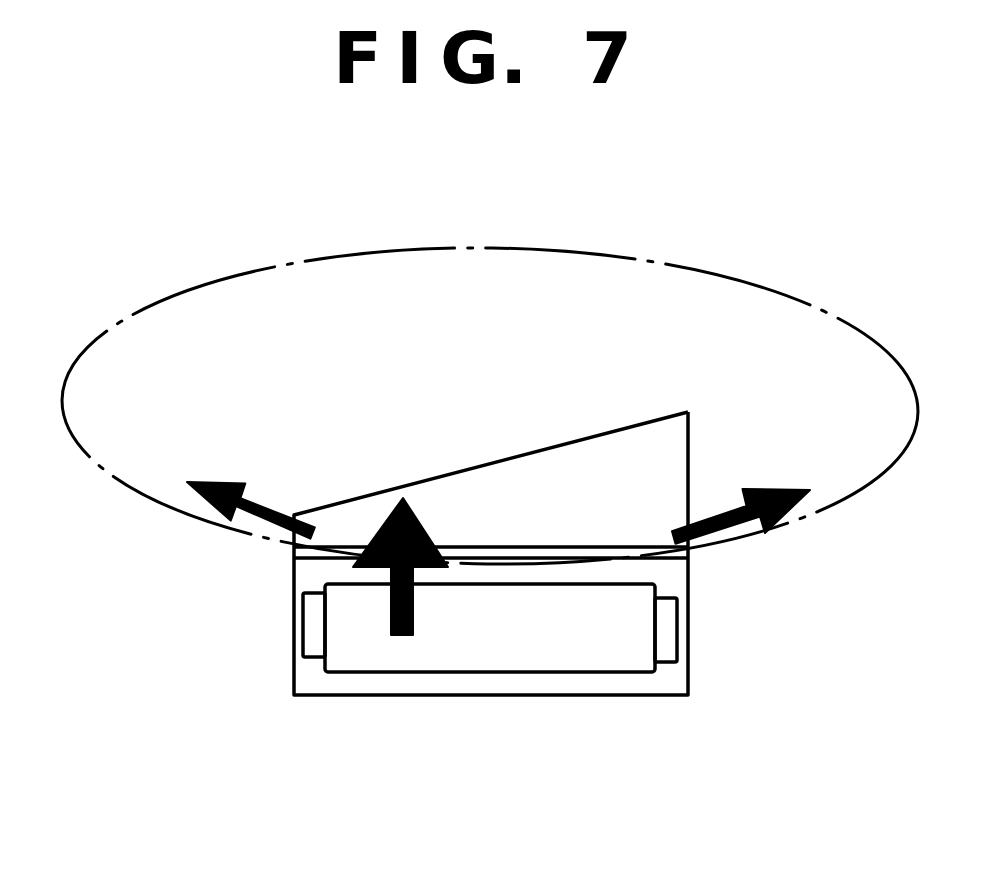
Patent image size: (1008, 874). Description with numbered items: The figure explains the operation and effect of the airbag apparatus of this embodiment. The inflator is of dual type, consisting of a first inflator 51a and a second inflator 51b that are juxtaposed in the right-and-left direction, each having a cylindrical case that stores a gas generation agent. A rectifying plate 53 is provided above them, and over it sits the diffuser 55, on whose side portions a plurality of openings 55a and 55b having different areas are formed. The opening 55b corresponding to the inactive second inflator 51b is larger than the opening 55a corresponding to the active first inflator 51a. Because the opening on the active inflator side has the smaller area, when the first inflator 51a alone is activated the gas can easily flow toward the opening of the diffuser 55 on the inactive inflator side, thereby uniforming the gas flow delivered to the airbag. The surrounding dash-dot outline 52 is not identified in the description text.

The first inflator 51a is at (358, 658).
The second inflator 51b is at (610, 653).
The rotating disc 52 is at (783, 298).
The rectifying plate 53 is at (542, 547).
The diffuser 55 is at (647, 420).
The opening 55a is at (294, 547).
The opening 55b is at (690, 474).